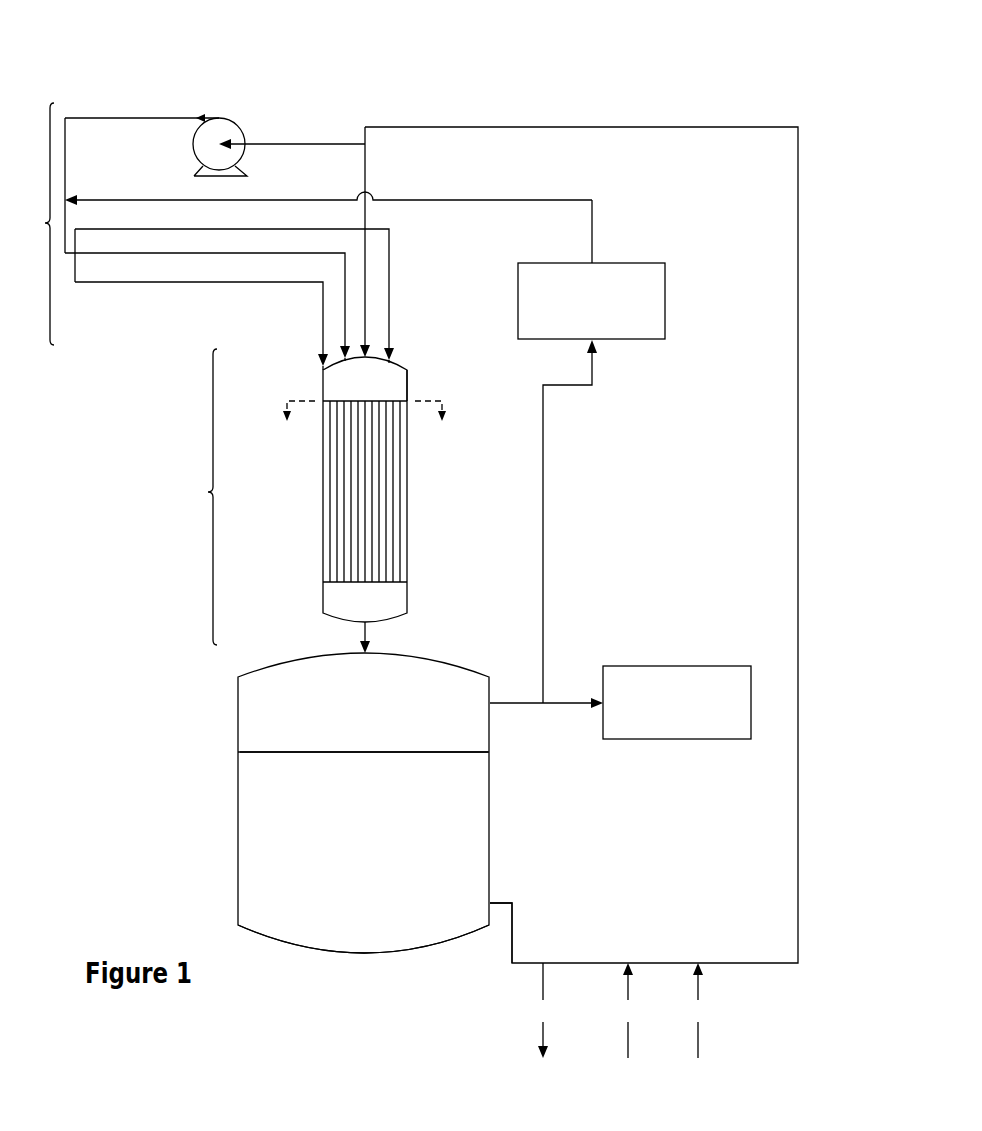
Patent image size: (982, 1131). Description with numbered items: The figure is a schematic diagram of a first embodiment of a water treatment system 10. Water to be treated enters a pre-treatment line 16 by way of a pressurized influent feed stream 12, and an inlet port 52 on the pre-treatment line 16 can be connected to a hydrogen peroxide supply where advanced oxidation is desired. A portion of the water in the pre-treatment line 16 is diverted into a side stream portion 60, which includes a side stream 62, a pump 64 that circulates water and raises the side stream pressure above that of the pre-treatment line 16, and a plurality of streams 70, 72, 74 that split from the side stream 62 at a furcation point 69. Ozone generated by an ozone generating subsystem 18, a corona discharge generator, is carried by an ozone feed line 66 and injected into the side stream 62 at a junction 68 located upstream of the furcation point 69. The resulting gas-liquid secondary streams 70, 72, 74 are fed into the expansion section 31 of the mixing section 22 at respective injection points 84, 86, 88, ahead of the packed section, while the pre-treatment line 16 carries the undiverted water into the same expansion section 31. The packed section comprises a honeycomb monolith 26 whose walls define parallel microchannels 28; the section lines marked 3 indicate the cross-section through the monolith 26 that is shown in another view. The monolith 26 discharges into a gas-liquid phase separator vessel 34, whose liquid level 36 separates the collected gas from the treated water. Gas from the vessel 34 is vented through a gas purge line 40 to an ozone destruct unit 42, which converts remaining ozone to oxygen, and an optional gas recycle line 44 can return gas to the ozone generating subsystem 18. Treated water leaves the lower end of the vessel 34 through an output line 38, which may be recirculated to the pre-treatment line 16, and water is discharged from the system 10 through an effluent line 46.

The water treatment system 10 is at (740, 72).
The pressurized influent feed stream 12 is at (699, 1035).
The pre-treatment line 16 is at (798, 652).
The ozone generating subsystem 18 is at (651, 274).
The mixing section 22 is at (293, 501).
The monolith 26 is at (405, 693).
The microchannels 28 is at (400, 773).
The expansion section 31 is at (407, 386).
The gas-liquid phase separator vessel 34 is at (338, 927).
The liquid level 36 is at (280, 752).
The output line 38 is at (512, 922).
The gas purge line 40 is at (516, 705).
The ozone destruct unit 42 is at (720, 728).
The gas recycle line 44 is at (545, 423).
The effluent line 46 is at (543, 1035).
The inlet port 52 is at (629, 1035).
The side stream portion 60 is at (40, 224).
The side stream 62 is at (300, 143).
The pump 64 is at (240, 127).
The ozone feed line 66 is at (460, 200).
The junction 68 is at (68, 198).
The furcation point 69 is at (75, 253).
The secondary stream 70 is at (143, 229).
The secondary stream 72 is at (143, 253).
The secondary stream 74 is at (143, 282).
The injection point 84 is at (313, 378).
The injection point 86 is at (345, 362).
The injection point 88 is at (389, 361).
The section line for FIG. 3 is at (365, 427).